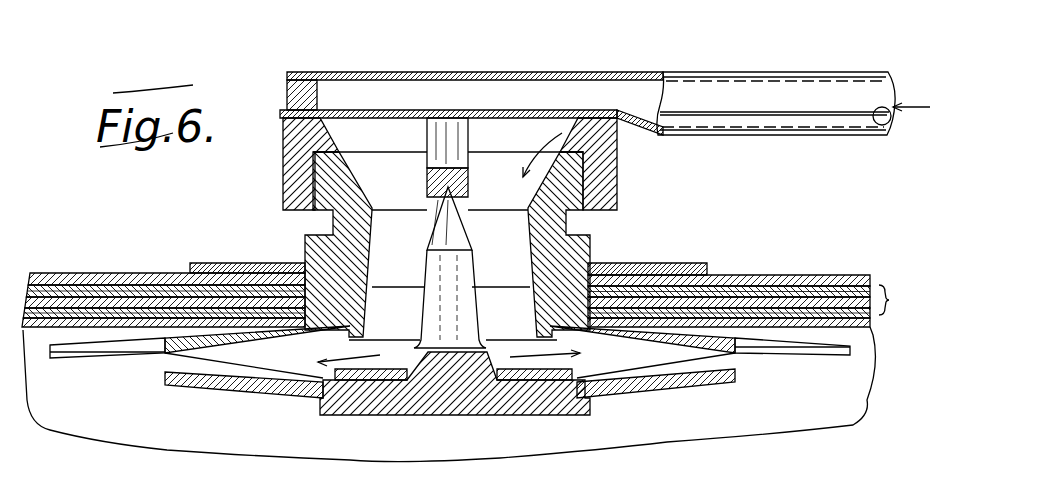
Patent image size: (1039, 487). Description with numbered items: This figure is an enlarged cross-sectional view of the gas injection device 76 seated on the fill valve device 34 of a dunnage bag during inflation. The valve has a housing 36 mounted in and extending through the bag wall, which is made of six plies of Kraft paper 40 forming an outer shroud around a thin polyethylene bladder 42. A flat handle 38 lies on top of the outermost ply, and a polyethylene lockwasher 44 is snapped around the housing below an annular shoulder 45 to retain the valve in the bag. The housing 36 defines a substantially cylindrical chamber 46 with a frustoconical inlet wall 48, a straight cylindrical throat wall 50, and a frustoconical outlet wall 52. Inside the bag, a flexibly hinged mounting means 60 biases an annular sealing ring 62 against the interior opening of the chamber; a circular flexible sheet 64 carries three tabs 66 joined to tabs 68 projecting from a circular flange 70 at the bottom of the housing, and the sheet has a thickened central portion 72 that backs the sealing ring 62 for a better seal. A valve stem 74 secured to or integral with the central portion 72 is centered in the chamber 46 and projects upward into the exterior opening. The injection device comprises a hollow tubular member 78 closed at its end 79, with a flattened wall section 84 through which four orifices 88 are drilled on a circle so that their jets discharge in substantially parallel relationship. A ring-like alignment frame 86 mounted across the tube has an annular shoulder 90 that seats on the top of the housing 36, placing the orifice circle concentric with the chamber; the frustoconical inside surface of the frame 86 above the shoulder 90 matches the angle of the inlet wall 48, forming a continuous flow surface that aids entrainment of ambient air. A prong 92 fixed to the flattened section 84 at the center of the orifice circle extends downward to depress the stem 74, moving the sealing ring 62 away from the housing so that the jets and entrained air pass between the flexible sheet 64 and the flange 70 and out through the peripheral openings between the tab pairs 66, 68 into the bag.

The fill valve device 34 is at (212, 233).
The housing 36 is at (588, 233).
The handle 38 is at (780, 272).
The plies of Kraft paper 40 is at (474, 295).
The polyethylene bladder 42 is at (868, 342).
The lockwasher 44 is at (688, 262).
The annular shoulder 45 is at (604, 263).
The chamber 46 is at (396, 236).
The inlet wall 48 is at (530, 208).
The throat wall 50 is at (367, 274).
The outlet wall 52 is at (530, 297).
The mounting means 60 is at (143, 375).
The annular sealing ring 62 is at (365, 343).
The circular flexible sheet 64 is at (256, 390).
The tabs 66 is at (87, 362).
The tabs 68 is at (50, 347).
The circular flange 70 is at (258, 337).
The reinforced central portion 72 is at (433, 403).
The valve stem 74 is at (457, 264).
The gas injection device 76 is at (734, 47).
The tubular member 78 is at (503, 72).
The end 79 is at (285, 93).
The flattened section 84 is at (332, 152).
The alignment frame 86 is at (618, 163).
The orifices 88 is at (488, 137).
The annular shoulder 90 is at (397, 190).
The prong 92 is at (462, 158).